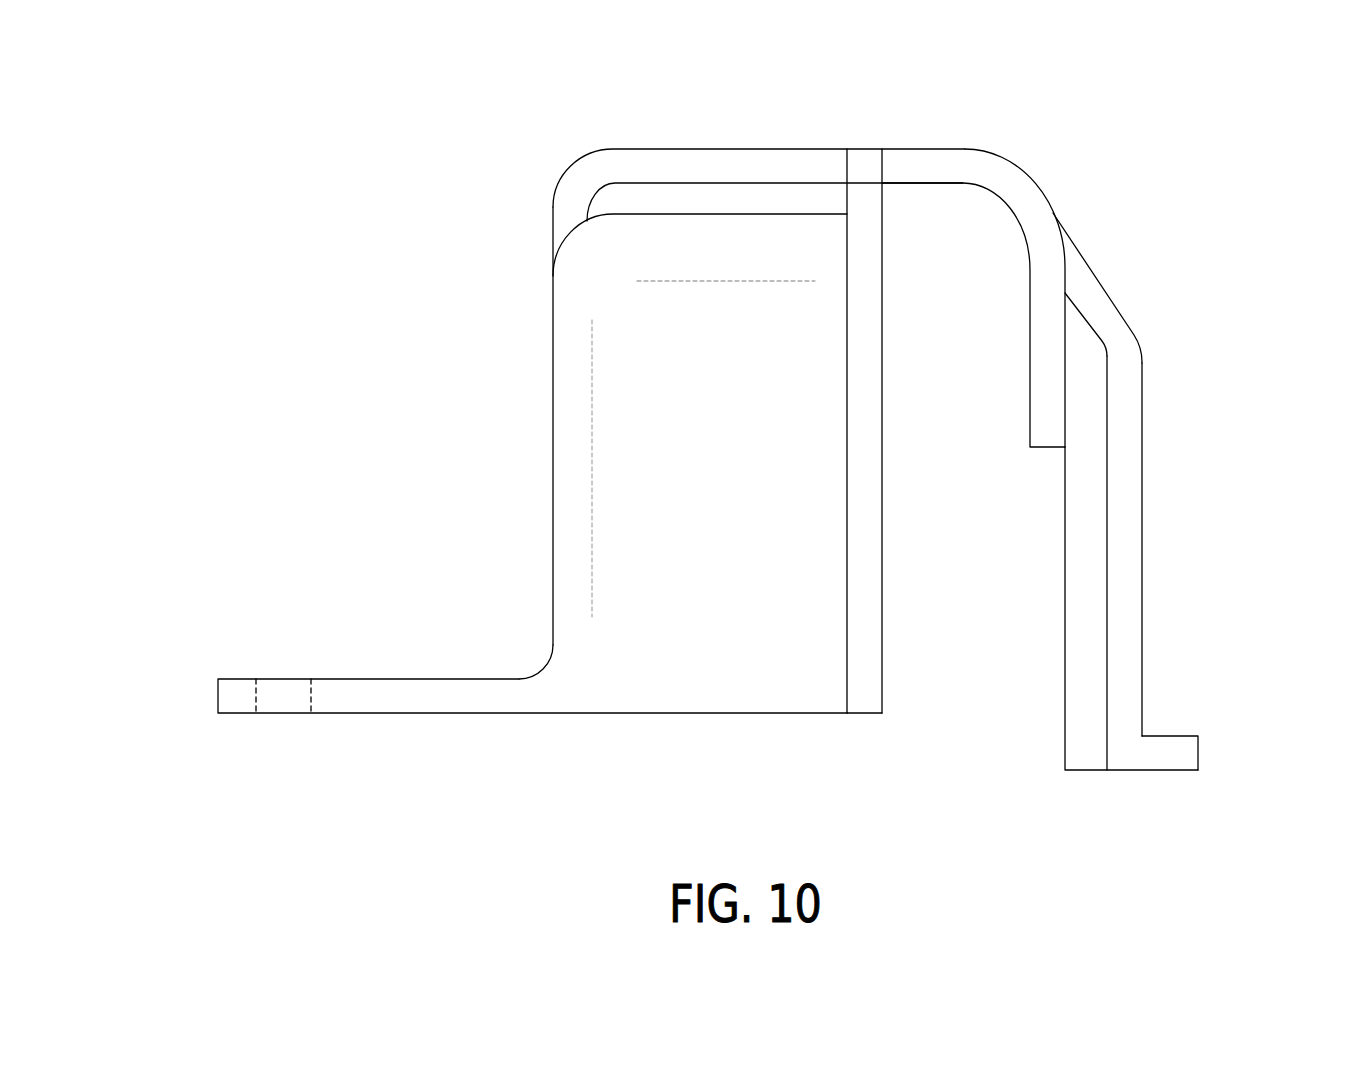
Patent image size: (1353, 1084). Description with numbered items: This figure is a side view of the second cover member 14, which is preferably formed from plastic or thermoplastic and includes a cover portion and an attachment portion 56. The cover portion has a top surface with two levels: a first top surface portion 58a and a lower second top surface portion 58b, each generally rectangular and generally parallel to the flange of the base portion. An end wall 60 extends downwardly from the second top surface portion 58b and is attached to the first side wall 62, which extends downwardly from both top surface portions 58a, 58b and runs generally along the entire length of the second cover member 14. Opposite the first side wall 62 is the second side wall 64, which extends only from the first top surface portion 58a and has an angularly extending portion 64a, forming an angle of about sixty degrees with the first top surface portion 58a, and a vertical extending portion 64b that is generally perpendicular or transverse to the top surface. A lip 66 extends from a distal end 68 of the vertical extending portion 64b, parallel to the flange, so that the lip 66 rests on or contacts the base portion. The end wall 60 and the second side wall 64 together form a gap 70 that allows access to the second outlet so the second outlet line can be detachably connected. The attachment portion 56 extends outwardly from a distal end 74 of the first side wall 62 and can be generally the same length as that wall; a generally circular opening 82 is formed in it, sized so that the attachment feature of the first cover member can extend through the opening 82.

The second cover member 14 is at (965, 149).
The attachment portion 56 is at (218, 698).
The first top surface portion 58a is at (728, 149).
The second top surface portion 58b is at (735, 215).
The end wall 60 is at (807, 594).
The first side wall 62 is at (553, 317).
The second side wall 64 is at (1143, 483).
The angularly extending portion 64a is at (1105, 292).
The vertical extending portion 64b is at (1143, 594).
The lip 66 is at (1198, 752).
The distal end 68 is at (1065, 743).
The gap 70 is at (882, 667).
The distal end 74 is at (545, 670).
The opening 82 is at (282, 695).